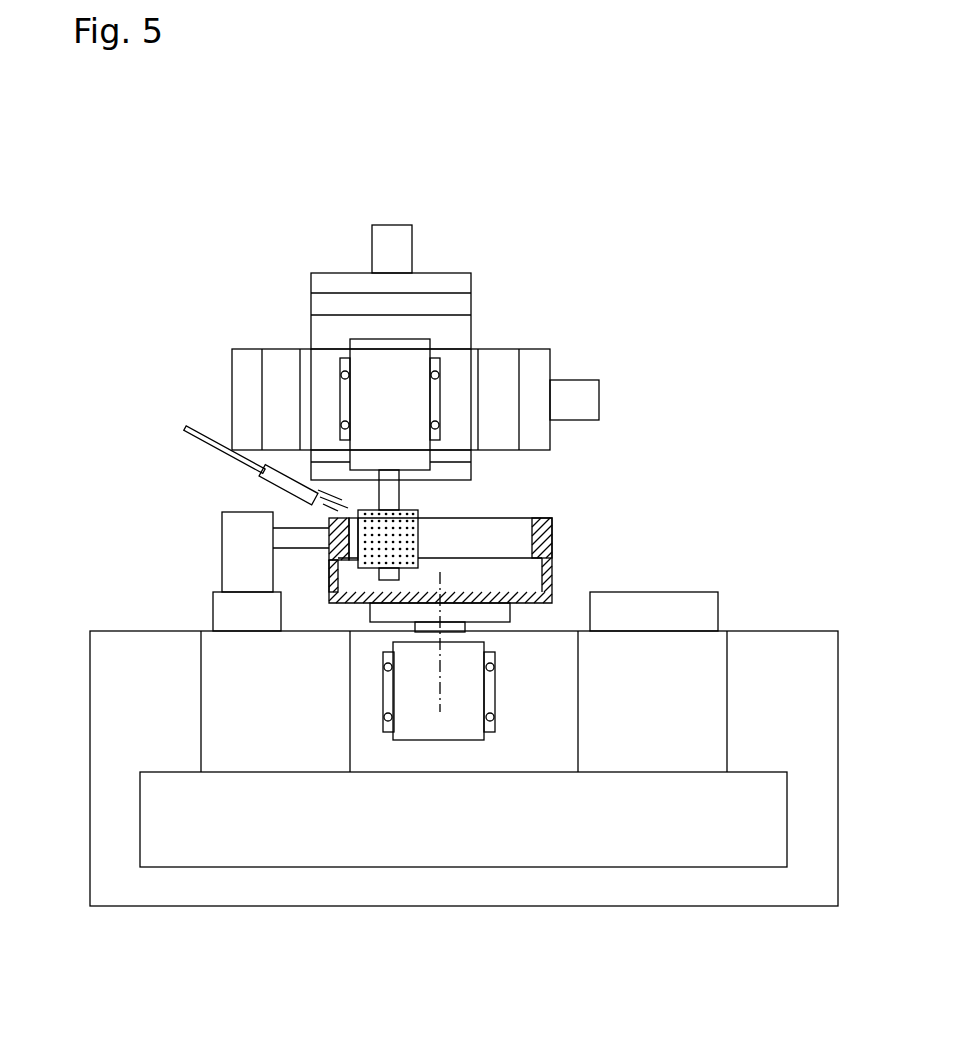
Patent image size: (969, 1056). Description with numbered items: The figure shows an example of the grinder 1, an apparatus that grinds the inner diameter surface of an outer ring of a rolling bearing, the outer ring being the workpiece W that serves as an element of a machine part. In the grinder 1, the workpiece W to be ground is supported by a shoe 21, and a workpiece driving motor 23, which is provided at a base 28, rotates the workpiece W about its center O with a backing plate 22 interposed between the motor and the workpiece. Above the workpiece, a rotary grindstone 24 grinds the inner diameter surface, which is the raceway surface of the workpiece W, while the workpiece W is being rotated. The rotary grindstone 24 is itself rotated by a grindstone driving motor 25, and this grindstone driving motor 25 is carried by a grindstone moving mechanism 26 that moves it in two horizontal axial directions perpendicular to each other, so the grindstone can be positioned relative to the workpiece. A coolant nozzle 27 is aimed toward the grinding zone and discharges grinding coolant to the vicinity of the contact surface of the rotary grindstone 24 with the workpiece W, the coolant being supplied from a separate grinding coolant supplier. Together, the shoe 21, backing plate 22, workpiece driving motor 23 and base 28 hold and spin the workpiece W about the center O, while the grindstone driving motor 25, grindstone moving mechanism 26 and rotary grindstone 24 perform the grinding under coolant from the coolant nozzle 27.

The grinder 1 is at (537, 222).
The shoe 21 is at (300, 527).
The backing plate 22 is at (493, 622).
The workpiece driving motor 23 is at (427, 708).
The rotary grindstone 24 is at (362, 545).
The grindstone driving motor 25 is at (380, 395).
The grindstone moving mechanism 26 is at (555, 368).
The coolant nozzle 27 is at (285, 467).
The base 28 is at (762, 819).
The workpiece W is at (555, 540).
The center O is at (440, 690).